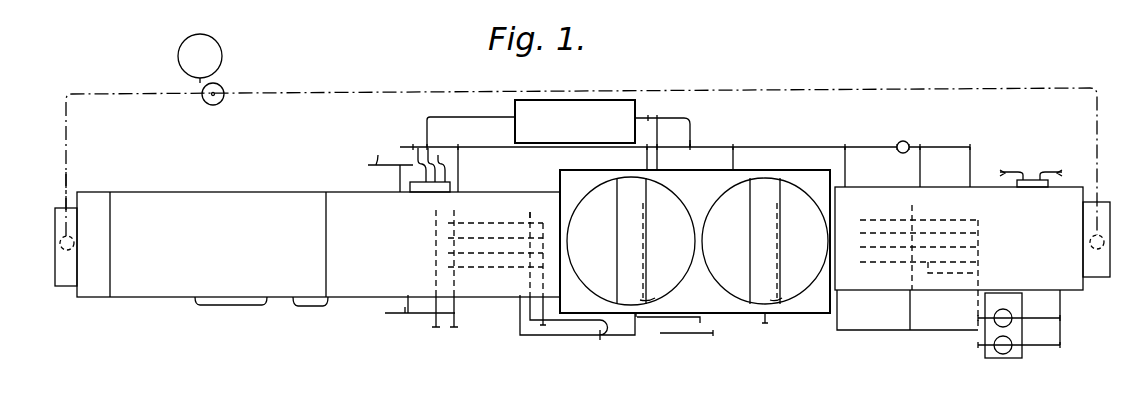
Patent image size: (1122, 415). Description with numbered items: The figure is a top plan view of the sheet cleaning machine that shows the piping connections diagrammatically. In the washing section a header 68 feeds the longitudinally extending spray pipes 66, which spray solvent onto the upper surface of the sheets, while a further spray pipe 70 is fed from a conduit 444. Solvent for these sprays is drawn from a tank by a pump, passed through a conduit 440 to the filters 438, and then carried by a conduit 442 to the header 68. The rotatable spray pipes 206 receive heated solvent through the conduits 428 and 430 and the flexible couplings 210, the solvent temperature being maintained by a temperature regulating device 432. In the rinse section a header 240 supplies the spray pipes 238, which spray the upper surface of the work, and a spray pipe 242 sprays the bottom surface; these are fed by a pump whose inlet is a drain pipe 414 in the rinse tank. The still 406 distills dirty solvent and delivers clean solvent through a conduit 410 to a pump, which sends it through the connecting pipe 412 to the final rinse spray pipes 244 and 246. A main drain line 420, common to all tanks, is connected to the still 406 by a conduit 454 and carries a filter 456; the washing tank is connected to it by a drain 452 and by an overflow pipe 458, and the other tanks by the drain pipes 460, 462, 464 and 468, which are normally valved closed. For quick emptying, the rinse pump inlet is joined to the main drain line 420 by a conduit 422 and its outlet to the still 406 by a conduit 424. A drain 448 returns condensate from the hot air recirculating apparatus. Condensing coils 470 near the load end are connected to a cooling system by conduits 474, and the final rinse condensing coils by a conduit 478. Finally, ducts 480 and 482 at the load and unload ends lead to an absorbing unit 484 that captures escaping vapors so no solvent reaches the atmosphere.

The spray pipes 66 is at (925, 222).
The header 68 is at (978, 270).
The spray pipe 70 is at (912, 268).
The spray pipe 206 is at (645, 250).
The flexible coupling 210 is at (640, 300).
The spray pipes 238 is at (460, 238).
The header 240 is at (560, 268).
The spray pipe 242 is at (545, 201).
The spray pipe 244 is at (455, 285).
The spray pipe 246 is at (436, 265).
The still 406 is at (605, 107).
The conduit 410 is at (430, 117).
The connecting pipe 412 is at (385, 313).
The drain pipe 414 is at (518, 335).
The main drain line 420 is at (837, 132).
The conduit 422 is at (647, 156).
The conduit 424 is at (657, 135).
The conduit 428 is at (690, 313).
The conduit 430 is at (765, 324).
The temperature regulating device 432 is at (713, 334).
The filters 438 is at (1003, 309).
The conduit 440 is at (1060, 305).
The conduit 442 is at (635, 338).
The conduit 444 is at (616, 356).
The drain 448 is at (265, 306).
The drain 452 is at (970, 162).
The conduit 454 is at (690, 140).
The filter 456 is at (903, 140).
The overflow pipe 458 is at (920, 182).
The drain pipe 460 is at (845, 182).
The drain pipe 462 is at (736, 160).
The drain pipe 464 is at (458, 182).
The drain pipe 468 is at (328, 307).
The condensing coils 470 is at (1070, 162).
The conduits 474 is at (1000, 172).
The conduit 478 is at (378, 164).
The duct 480 is at (343, 73).
The duct 482 is at (80, 94).
The absorbing unit 484 is at (243, 35).